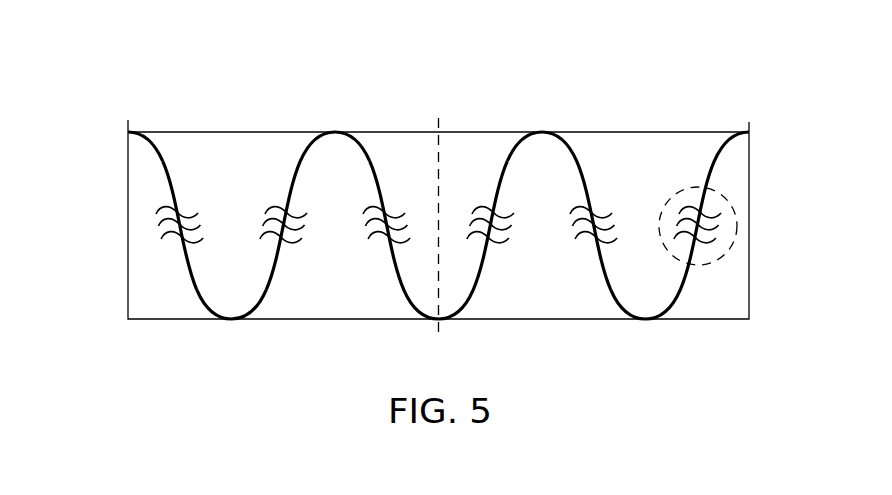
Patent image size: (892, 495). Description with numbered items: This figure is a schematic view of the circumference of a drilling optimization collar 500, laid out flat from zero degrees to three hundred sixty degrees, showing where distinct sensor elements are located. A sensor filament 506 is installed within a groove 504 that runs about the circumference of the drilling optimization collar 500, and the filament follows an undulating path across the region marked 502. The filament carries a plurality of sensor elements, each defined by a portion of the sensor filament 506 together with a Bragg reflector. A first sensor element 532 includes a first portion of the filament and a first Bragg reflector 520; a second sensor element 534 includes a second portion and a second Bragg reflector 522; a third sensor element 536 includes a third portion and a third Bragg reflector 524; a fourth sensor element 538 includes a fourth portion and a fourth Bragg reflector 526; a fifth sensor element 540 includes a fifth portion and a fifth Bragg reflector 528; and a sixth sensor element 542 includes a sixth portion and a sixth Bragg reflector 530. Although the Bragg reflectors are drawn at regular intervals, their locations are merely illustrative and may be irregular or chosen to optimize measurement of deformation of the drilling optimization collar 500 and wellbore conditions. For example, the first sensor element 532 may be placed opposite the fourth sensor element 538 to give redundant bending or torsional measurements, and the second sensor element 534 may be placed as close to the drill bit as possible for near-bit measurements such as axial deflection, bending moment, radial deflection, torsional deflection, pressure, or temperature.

The drilling optimization collar 500 is at (519, 52).
The profile region 502 is at (315, 287).
The groove 504 is at (167, 154).
The sensor filament 506 is at (178, 177).
The first Bragg reflector 520 is at (178, 243).
The second Bragg reflector 522 is at (275, 240).
The third Bragg reflector 524 is at (393, 210).
The fourth Bragg reflector 526 is at (490, 247).
The fifth Bragg reflector 528 is at (598, 211).
The sixth Bragg reflector 530 is at (697, 250).
The first sensor element 532 is at (145, 141).
The second sensor element 534 is at (200, 306).
The third sensor element 536 is at (297, 150).
The fourth sensor element 538 is at (473, 306).
The fifth sensor element 540 is at (580, 150).
The sixth sensor element 542 is at (612, 306).